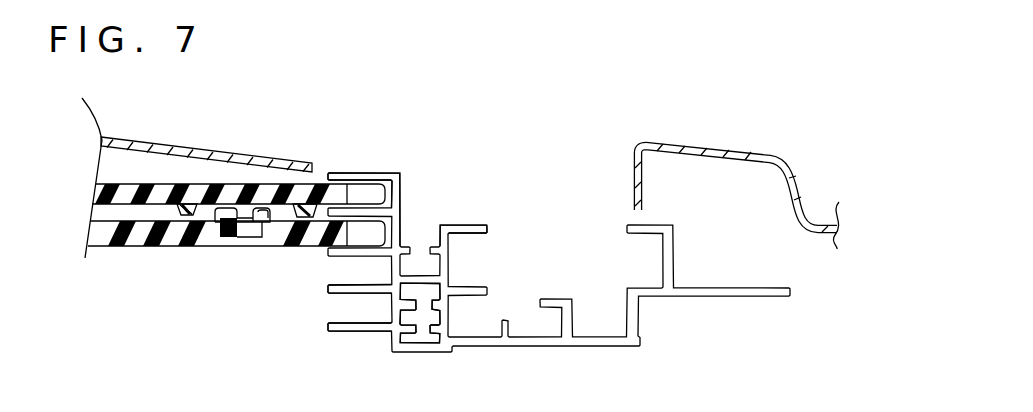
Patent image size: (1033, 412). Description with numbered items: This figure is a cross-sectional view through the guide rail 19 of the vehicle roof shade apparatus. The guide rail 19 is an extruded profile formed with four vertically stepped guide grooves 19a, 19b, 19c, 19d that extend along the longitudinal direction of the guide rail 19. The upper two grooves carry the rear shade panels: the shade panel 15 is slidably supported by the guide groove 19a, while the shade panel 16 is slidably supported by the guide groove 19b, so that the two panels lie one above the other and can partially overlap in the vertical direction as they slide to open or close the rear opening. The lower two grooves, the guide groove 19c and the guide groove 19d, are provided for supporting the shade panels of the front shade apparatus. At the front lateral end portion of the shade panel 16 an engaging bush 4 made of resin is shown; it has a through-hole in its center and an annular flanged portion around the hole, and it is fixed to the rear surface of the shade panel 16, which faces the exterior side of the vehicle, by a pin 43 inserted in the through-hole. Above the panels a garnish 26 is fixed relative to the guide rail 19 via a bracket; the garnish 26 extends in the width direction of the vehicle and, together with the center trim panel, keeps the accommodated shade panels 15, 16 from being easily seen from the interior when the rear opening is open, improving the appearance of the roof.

The garnish 26 is at (128, 144).
The shade panel 15 is at (233, 197).
The engaging bush 4 is at (272, 200).
The pin 43 is at (242, 230).
The shade panel 16 is at (137, 250).
The guide rail 19 is at (663, 328).
The guide groove 19a is at (403, 187).
The guide groove 19b is at (402, 250).
The guide groove 19c is at (338, 283).
The guide groove 19d is at (360, 310).